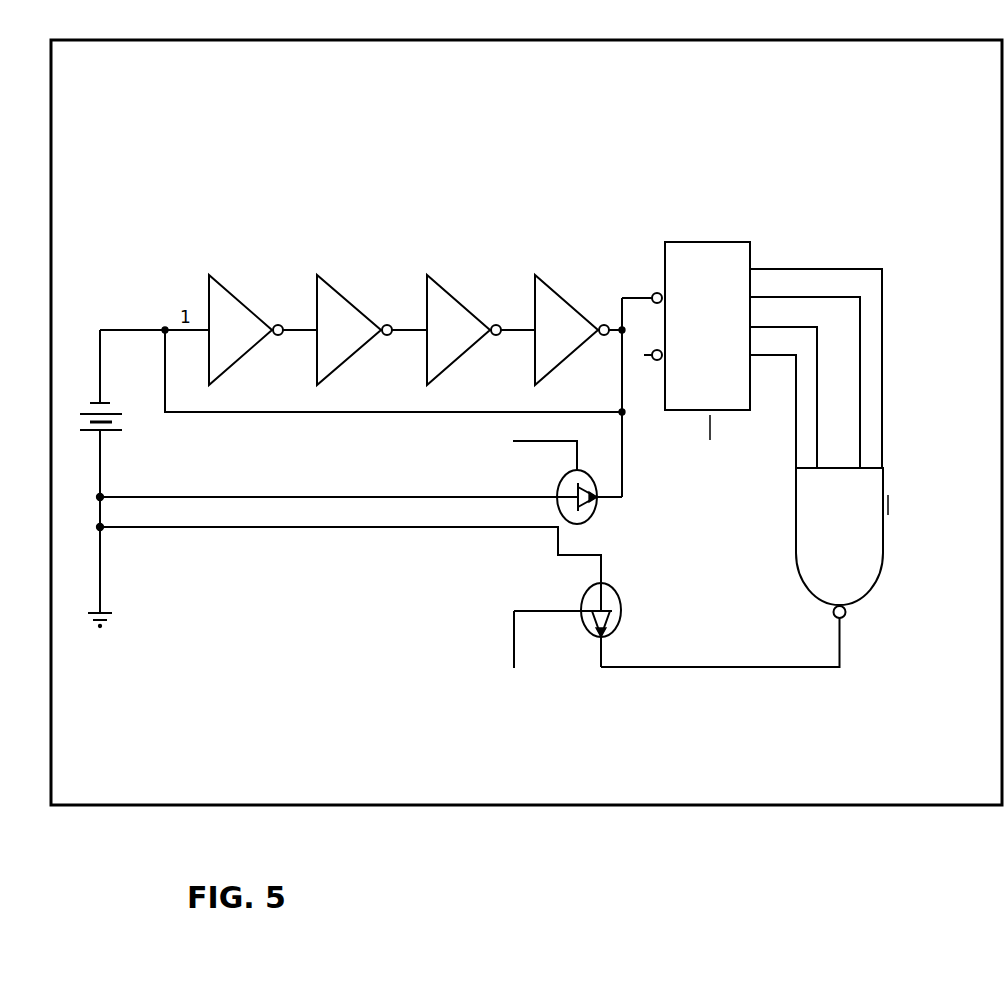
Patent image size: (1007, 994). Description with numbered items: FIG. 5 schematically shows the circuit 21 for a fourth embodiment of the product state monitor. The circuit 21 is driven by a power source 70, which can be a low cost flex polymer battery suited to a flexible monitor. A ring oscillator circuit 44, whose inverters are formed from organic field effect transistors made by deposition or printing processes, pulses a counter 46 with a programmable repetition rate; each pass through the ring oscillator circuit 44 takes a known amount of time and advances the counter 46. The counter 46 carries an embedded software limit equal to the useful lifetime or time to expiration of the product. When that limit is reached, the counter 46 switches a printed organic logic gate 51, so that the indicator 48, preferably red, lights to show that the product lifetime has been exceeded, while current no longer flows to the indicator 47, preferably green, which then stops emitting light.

The circuit 21 is at (636, 842).
The ring oscillator circuit 44 is at (560, 247).
The counter 46 is at (690, 240).
The indicator 47 is at (602, 507).
The indicator 48 is at (593, 642).
The printed organic logic gate 51 is at (766, 551).
The power source 70 is at (72, 415).